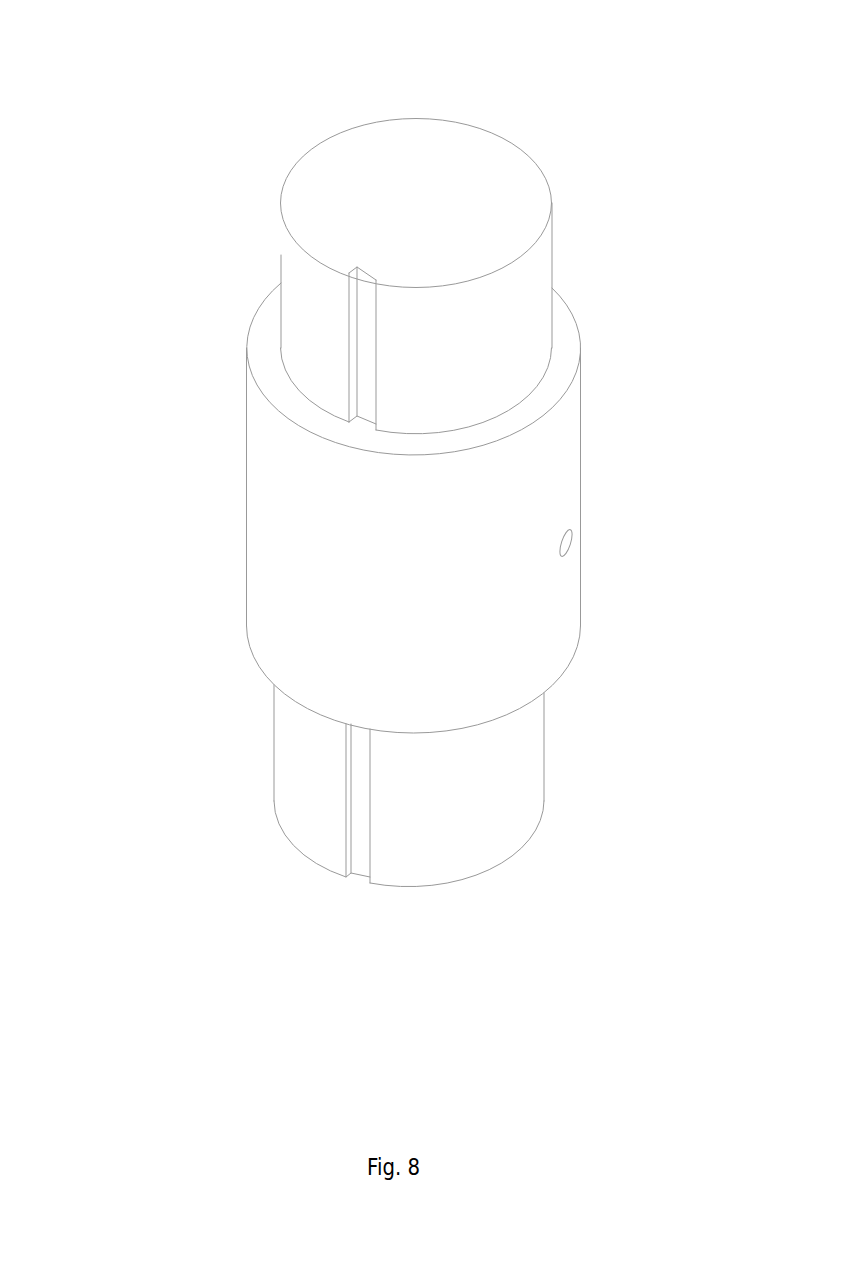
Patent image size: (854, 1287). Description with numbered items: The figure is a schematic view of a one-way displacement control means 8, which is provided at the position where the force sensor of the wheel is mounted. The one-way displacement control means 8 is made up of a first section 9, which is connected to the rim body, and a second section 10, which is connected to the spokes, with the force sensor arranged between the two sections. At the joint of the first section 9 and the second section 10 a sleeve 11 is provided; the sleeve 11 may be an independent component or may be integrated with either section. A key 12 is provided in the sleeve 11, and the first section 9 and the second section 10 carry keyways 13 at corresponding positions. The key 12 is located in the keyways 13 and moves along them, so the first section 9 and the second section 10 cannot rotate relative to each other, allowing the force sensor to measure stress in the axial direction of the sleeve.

The one-way displacement control means 8 is at (363, 955).
The first section 9 is at (493, 168).
The second section 10 is at (517, 788).
The sleeve 11 is at (268, 558).
The key 12 is at (363, 422).
The keyways 13 is at (365, 312).